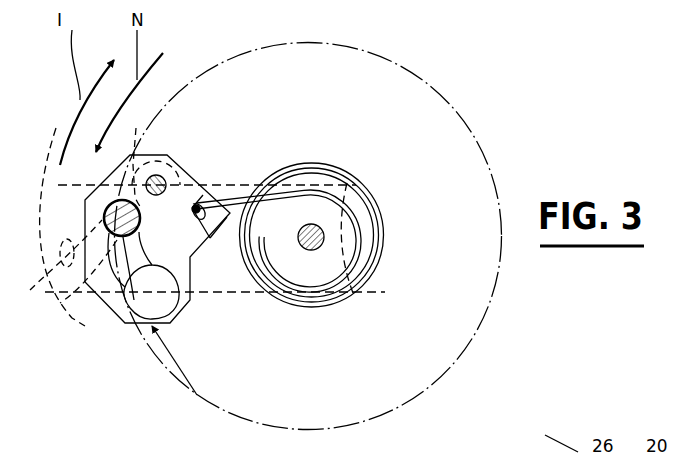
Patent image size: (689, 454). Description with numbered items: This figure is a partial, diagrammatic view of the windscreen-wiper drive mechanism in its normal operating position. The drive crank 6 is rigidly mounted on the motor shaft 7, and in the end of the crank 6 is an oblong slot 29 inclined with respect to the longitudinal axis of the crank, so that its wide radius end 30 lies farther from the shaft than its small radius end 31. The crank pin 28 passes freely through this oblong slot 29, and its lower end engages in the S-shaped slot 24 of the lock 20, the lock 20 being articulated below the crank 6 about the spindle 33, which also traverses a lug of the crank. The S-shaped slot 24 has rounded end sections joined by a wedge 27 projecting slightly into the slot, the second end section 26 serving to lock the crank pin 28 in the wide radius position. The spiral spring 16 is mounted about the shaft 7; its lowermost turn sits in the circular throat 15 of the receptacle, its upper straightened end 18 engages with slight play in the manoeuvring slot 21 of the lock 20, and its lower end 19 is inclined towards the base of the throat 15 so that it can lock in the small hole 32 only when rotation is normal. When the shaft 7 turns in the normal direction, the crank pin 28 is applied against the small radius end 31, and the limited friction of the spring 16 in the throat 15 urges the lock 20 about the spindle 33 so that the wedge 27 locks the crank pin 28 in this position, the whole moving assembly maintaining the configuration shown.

The drive crank 6 is at (58, 185).
The motor shaft 7 is at (310, 250).
The circular throat 15 is at (251, 278).
The spiral spring 16 is at (318, 163).
The upper straightened end of the spring 18 is at (200, 204).
The lower end of the spring 19 is at (262, 298).
The lock 20 is at (168, 300).
The manoeuvring slot 21 is at (227, 232).
The S-shaped slot 24 is at (123, 287).
The rounded end section of the S-shaped slot 26 is at (171, 322).
The wedge 27 is at (130, 303).
The crank pin 28 is at (104, 210).
The oblong slot 29 is at (40, 284).
The wide radius end of the oblong slot 30 is at (48, 313).
The small radius end of the oblong slot 31 is at (135, 133).
The small hole 32 is at (357, 184).
The spindle 33 is at (160, 178).